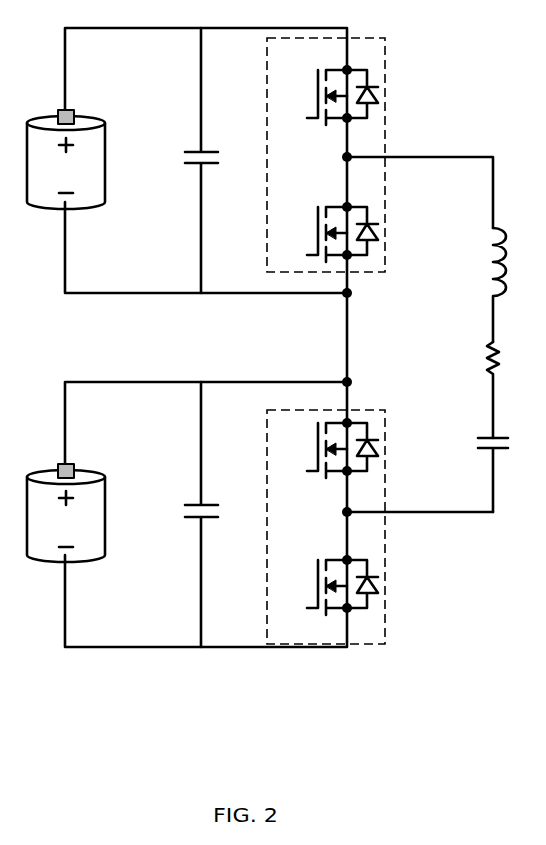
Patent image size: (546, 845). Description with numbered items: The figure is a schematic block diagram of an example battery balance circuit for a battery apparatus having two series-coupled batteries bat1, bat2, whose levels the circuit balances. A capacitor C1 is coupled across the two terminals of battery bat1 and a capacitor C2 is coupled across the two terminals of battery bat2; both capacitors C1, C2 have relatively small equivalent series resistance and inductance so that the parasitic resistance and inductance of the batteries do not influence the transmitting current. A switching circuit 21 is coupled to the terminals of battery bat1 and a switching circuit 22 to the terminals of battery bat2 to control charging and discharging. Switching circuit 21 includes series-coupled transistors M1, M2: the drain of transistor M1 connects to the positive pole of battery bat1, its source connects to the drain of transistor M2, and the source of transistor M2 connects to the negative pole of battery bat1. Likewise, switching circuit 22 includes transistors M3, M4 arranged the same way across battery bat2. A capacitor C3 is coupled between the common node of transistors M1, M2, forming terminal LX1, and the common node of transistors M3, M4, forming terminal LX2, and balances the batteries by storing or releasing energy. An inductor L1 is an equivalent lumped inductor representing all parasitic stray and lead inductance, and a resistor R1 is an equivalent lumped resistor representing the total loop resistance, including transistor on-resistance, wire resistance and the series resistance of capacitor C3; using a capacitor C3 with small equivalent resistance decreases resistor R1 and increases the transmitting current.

The switching circuit 21 is at (353, 155).
The switching circuit 22 is at (353, 527).
The transistor M1 is at (324, 95).
The transistor M2 is at (324, 232).
The transistor M3 is at (324, 448).
The transistor M4 is at (324, 585).
The capacitor C1 is at (215, 160).
The capacitor C2 is at (215, 514).
The capacitor C3 is at (476, 473).
The inductor L1 is at (474, 285).
The resistor R1 is at (472, 390).
The battery bat1 is at (88, 159).
The battery bat2 is at (88, 513).
The terminal LX1 is at (420, 179).
The terminal LX2 is at (420, 498).